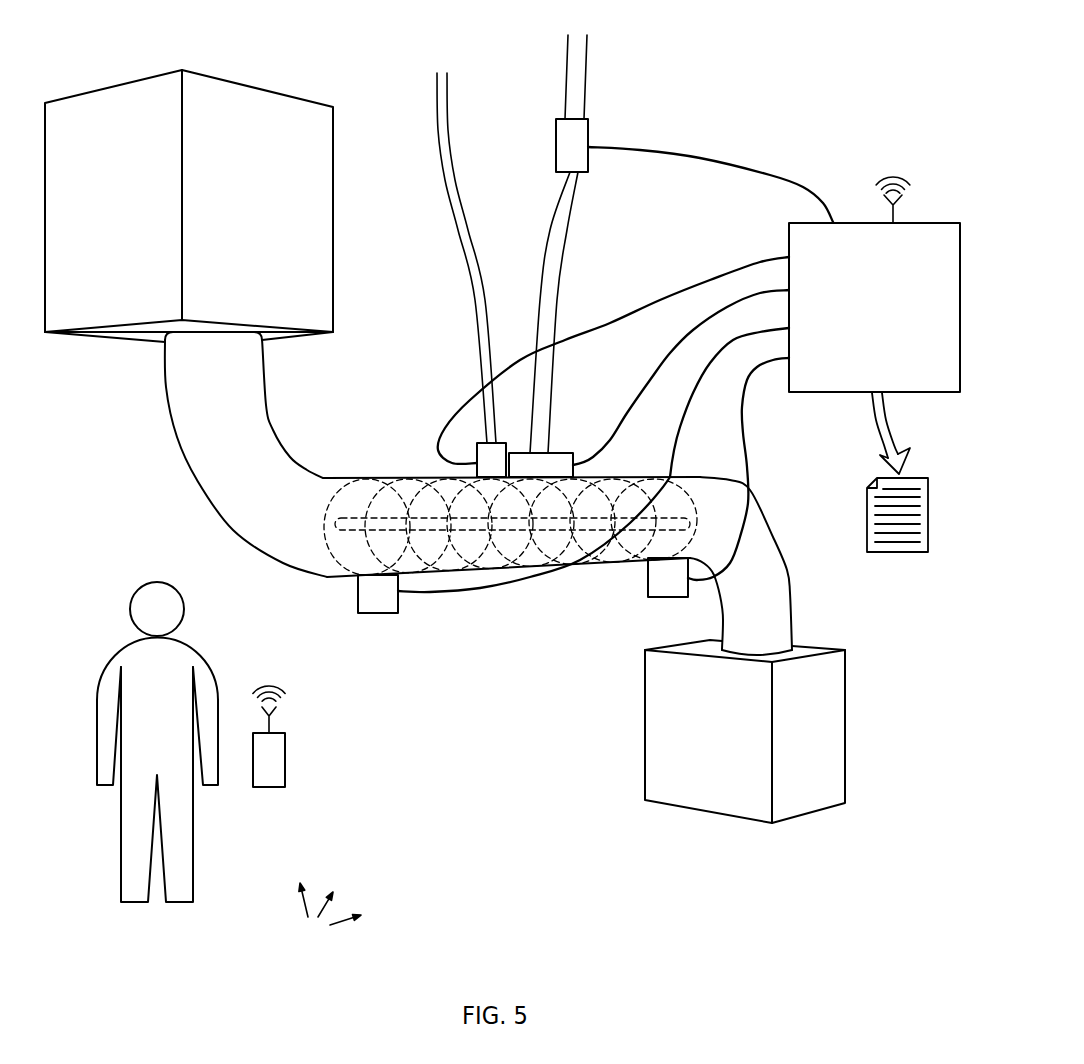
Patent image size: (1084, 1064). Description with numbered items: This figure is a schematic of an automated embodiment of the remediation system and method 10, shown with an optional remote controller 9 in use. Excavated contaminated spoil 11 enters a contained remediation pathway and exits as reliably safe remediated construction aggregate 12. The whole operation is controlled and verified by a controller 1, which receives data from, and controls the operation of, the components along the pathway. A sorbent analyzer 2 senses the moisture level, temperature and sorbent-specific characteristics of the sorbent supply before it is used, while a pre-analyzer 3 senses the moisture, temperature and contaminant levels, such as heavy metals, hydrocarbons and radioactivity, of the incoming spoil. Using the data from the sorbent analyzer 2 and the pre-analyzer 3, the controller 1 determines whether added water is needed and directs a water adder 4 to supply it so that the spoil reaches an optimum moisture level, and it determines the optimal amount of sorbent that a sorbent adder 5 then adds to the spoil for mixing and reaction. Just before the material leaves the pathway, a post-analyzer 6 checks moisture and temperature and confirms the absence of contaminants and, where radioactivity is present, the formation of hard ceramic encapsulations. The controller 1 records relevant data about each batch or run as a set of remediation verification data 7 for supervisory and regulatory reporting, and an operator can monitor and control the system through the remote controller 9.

The controller 1 is at (909, 230).
The sorbent analyzer 2 is at (585, 135).
The pre-analyzer 3 is at (366, 600).
The water adder 4 is at (484, 458).
The sorbent adder 5 is at (563, 457).
The post-analyzer 6 is at (653, 592).
The remediation verification data 7 is at (866, 497).
The remote controller 9 is at (277, 763).
The system and method 10 is at (329, 914).
The excavated contaminated spoil 11 is at (352, 241).
The remediated construction aggregate 12 is at (633, 715).